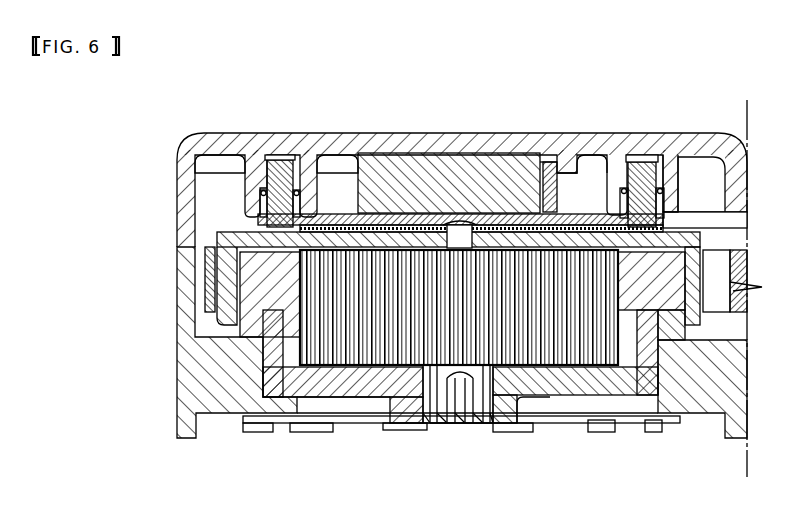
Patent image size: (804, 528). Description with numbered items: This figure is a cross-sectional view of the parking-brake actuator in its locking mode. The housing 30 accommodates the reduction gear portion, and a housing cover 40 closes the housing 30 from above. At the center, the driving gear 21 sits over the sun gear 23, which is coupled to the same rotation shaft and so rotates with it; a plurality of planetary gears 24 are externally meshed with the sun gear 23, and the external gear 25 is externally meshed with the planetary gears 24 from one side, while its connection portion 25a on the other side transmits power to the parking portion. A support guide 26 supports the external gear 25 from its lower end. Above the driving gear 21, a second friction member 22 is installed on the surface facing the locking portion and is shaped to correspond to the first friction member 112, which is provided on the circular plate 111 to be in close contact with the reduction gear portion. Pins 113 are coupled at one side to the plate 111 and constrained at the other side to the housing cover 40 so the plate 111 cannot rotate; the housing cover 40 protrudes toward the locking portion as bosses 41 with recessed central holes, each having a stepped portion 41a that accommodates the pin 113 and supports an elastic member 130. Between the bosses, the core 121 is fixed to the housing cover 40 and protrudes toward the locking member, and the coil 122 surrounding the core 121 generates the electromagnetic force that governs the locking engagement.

The driving gear 21 is at (700, 256).
The second friction member 22 is at (663, 233).
The sun gear 23 is at (410, 350).
The planetary gears 24 is at (367, 353).
The external gear 25 is at (507, 417).
The connection portion 25a is at (433, 420).
The support guide 26 is at (673, 327).
The housing 30 is at (195, 383).
The housing cover 40 is at (187, 211).
The boss 41 is at (250, 187).
The stepped portion 41a is at (317, 182).
The plate 111 is at (598, 220).
The first friction member 112 is at (663, 223).
The pin 113 is at (642, 163).
The core 121 is at (452, 157).
The coil 122 is at (549, 172).
The elastic member 130 is at (660, 175).